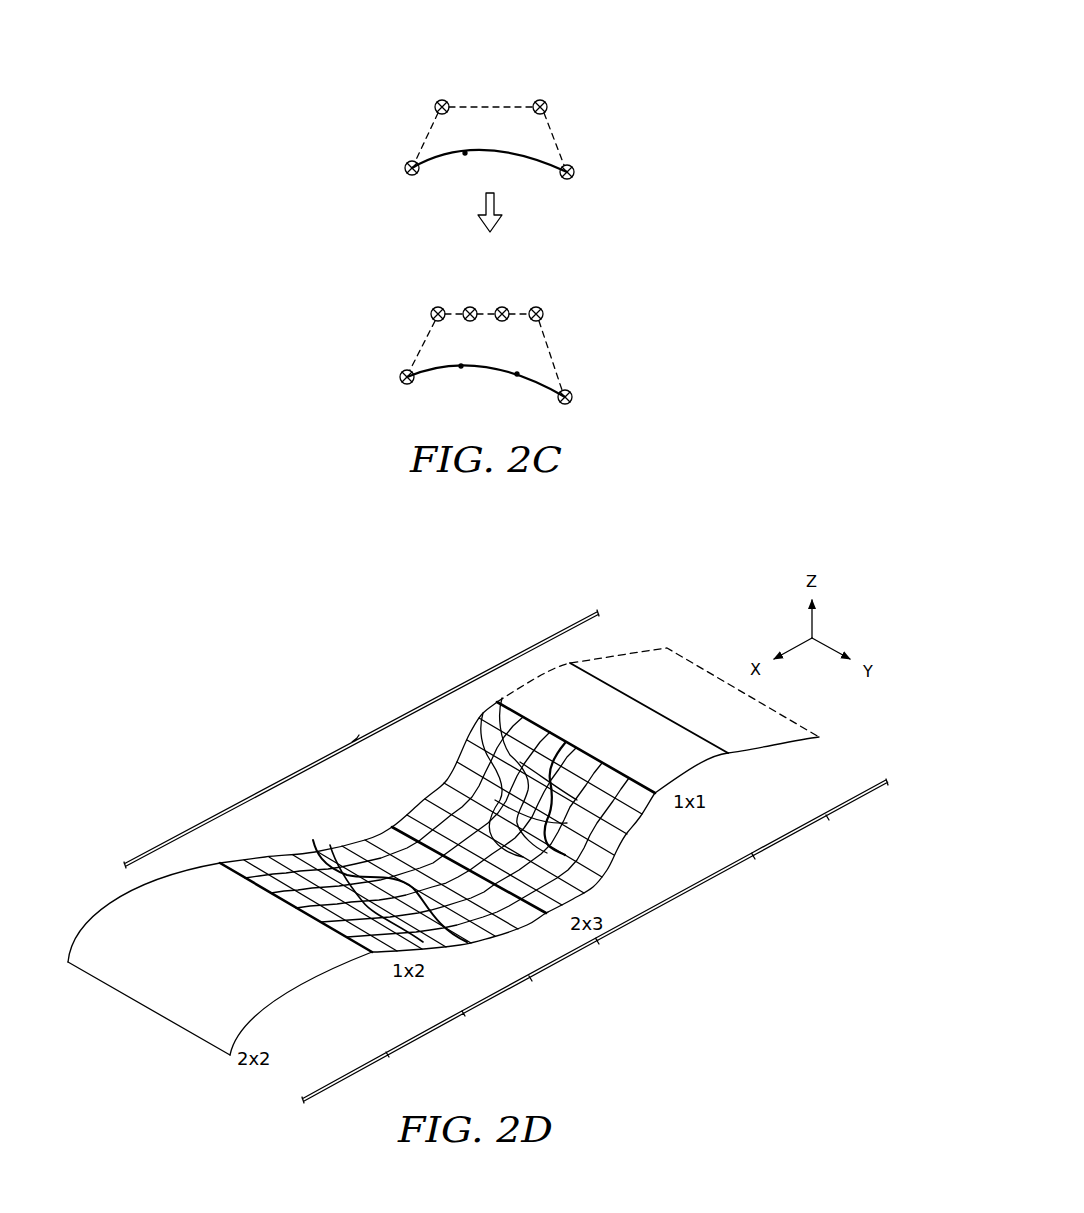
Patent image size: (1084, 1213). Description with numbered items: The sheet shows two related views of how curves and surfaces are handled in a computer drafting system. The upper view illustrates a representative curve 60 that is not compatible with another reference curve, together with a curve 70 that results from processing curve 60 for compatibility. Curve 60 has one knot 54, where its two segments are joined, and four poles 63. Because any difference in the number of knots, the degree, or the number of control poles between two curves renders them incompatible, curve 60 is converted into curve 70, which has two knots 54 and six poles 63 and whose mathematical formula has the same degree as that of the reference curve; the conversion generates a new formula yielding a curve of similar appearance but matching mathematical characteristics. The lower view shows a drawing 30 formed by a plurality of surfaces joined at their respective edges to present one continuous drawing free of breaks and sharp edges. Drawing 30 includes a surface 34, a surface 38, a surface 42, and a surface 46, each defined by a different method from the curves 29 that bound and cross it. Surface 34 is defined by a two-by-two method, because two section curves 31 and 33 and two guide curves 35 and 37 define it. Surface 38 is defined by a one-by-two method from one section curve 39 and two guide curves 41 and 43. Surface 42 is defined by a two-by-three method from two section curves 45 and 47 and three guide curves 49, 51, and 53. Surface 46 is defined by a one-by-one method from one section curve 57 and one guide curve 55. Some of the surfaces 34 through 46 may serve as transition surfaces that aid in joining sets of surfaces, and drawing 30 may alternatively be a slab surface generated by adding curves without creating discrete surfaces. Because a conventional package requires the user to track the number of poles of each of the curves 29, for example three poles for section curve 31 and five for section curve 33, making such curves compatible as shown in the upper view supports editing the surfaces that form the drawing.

In FIG. 2C, the curve 60 is at (463, 72).
In FIG. 2C, the poles 63 is at (436, 104).
In FIG. 2C, the knot 54 is at (465, 155).
In FIG. 2C, the curve 70 is at (633, 362).
In FIG. 2D, the curves 29 is at (361, 739).
In FIG. 2D, the drawing 30 is at (653, 952).
In FIG. 2D, the section curve 31 is at (148, 1010).
In FIG. 2D, the section curve 33 is at (287, 905).
In FIG. 2D, the surface 34 is at (383, 1057).
In FIG. 2D, the guide curve 35 is at (147, 887).
In FIG. 2D, the guide curve 37 is at (292, 988).
In FIG. 2D, the surface 38 is at (530, 976).
In FIG. 2D, the section curve 39 is at (332, 860).
In FIG. 2D, the guide curve 41 is at (365, 837).
In FIG. 2D, the surface 42 is at (675, 897).
In FIG. 2D, the guide curve 43 is at (478, 945).
In FIG. 2D, the section curve 45 is at (402, 830).
In FIG. 2D, the surface 46 is at (820, 817).
In FIG. 2D, the section curve 47 is at (603, 767).
In FIG. 2D, the guide curve 49 is at (463, 743).
In FIG. 2D, the guide curve 51 is at (565, 747).
In FIG. 2D, the guide curve 53 is at (625, 837).
In FIG. 2D, the guide curve 55 is at (750, 752).
In FIG. 2D, the section curve 57 is at (650, 708).